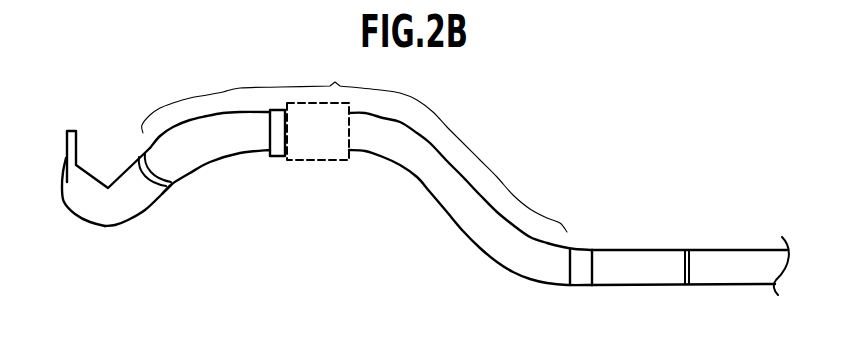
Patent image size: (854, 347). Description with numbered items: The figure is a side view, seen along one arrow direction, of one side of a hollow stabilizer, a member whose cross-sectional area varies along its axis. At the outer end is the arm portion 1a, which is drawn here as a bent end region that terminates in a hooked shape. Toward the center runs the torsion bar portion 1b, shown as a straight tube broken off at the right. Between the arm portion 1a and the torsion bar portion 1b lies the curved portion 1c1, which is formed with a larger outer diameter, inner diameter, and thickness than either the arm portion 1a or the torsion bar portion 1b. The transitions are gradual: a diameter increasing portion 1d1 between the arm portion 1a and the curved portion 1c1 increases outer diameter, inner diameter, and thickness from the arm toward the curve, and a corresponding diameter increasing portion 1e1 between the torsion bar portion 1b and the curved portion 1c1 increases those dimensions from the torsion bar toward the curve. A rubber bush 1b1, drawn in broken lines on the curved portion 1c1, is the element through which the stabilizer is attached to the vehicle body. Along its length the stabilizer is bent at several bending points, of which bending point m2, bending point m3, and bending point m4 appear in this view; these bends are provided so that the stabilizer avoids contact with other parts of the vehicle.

The arm portion 1a is at (127, 148).
The torsion bar portion 1b is at (777, 233).
The rubber bush 1b1 is at (315, 162).
The curved portion 1c1 is at (354, 145).
The diameter increasing portion 1d1 is at (171, 185).
The diameter increasing portion 1e1 is at (598, 292).
The bending point m2 is at (393, 140).
The bending point m3 is at (175, 157).
The bending point m4 is at (110, 219).